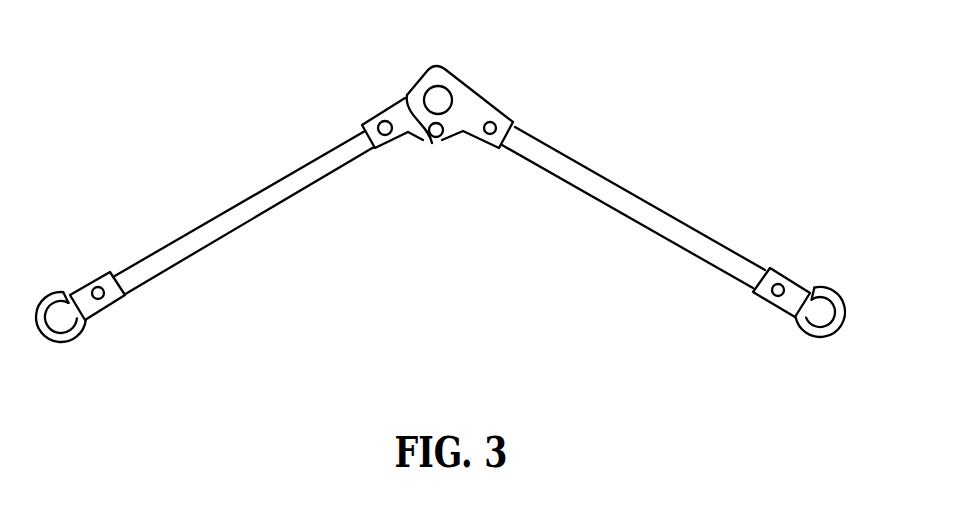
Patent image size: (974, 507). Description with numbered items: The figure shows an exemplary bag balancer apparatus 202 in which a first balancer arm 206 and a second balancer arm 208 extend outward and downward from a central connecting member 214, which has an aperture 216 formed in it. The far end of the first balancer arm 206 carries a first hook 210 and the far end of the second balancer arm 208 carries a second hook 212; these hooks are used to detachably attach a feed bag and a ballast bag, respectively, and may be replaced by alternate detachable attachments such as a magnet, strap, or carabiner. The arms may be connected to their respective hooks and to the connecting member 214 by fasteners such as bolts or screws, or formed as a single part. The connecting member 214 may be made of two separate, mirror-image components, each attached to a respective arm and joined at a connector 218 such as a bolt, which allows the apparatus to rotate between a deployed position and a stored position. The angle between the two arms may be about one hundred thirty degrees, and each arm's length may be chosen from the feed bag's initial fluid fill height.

The bag balancer apparatus 202 is at (485, 103).
The first balancer arm 206 is at (258, 192).
The second balancer arm 208 is at (603, 177).
The first hook 210 is at (90, 283).
The second hook 212 is at (782, 273).
The connecting member 214 is at (440, 144).
The aperture 216 is at (452, 103).
The connector 218 is at (431, 144).